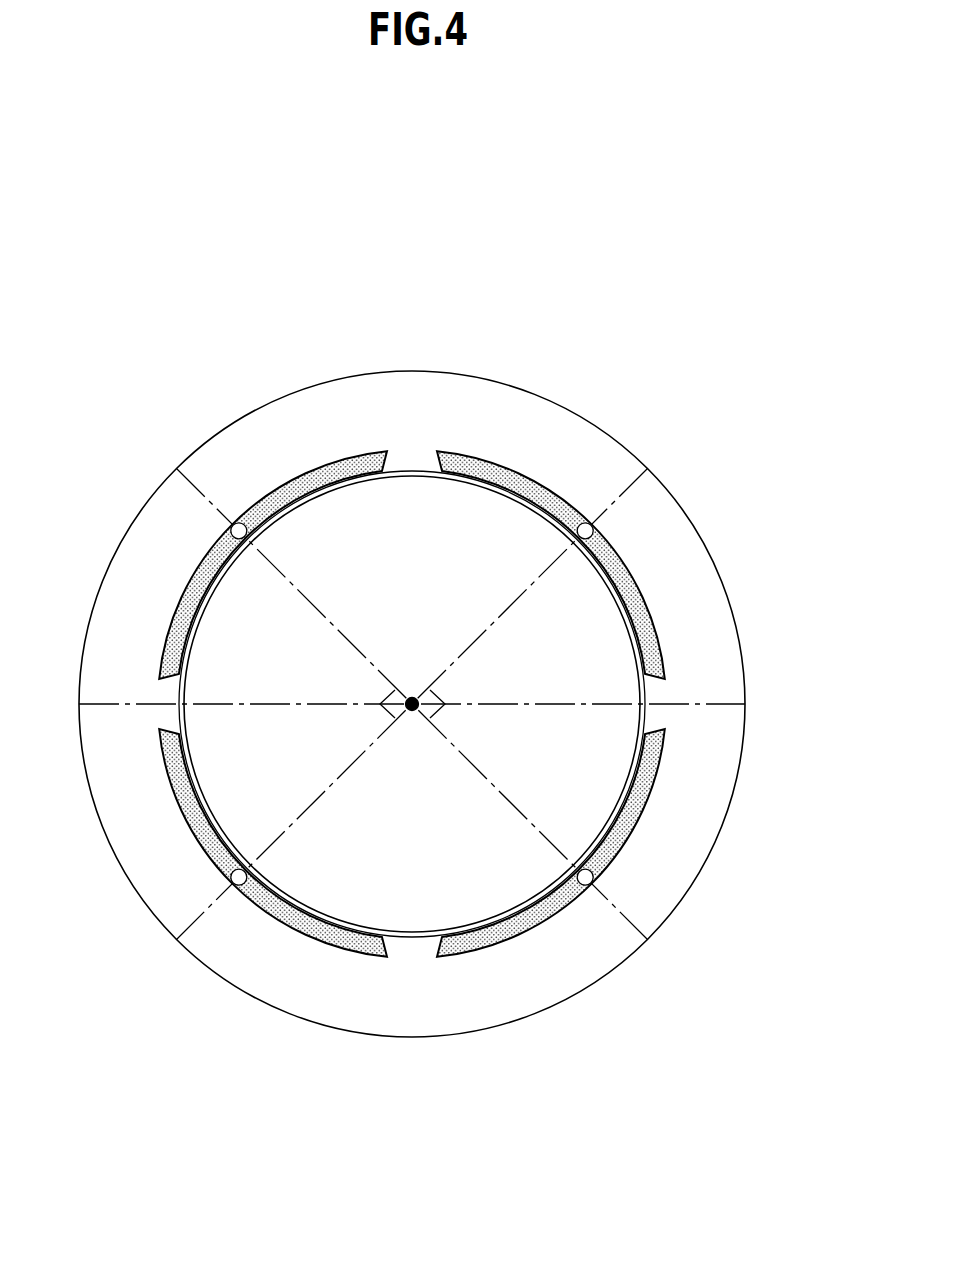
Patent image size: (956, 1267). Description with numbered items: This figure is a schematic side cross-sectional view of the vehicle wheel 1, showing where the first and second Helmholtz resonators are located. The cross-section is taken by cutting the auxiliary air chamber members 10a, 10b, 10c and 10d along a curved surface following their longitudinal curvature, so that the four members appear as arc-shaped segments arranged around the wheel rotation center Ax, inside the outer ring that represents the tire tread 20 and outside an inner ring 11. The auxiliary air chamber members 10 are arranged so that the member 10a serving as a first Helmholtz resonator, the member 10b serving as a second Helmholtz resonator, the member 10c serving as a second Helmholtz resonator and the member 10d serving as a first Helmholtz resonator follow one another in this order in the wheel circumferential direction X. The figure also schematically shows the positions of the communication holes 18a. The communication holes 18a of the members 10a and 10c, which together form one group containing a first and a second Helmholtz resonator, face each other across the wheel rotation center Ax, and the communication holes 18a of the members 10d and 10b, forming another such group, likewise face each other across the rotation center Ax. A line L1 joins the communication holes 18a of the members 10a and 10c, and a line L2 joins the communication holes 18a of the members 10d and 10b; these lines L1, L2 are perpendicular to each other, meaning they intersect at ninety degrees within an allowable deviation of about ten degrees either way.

The vehicle wheel 1 is at (414, 318).
The tire tread 20 is at (482, 378).
The inner cylindrical member 11 is at (186, 693).
The coil / piezoelectric element 10 is at (438, 706).
The auxiliary air chamber member 10a is at (278, 484).
The auxiliary air chamber member 10b is at (546, 484).
The auxiliary air chamber member 10c is at (546, 912).
The auxiliary air chamber member 10d is at (280, 912).
The communication hole 18a is at (212, 546).
The line L1 is at (337, 625).
The line L2 is at (492, 630).
The wheel rotation center Ax is at (412, 712).
The wheel circumferential direction X is at (338, 1077).